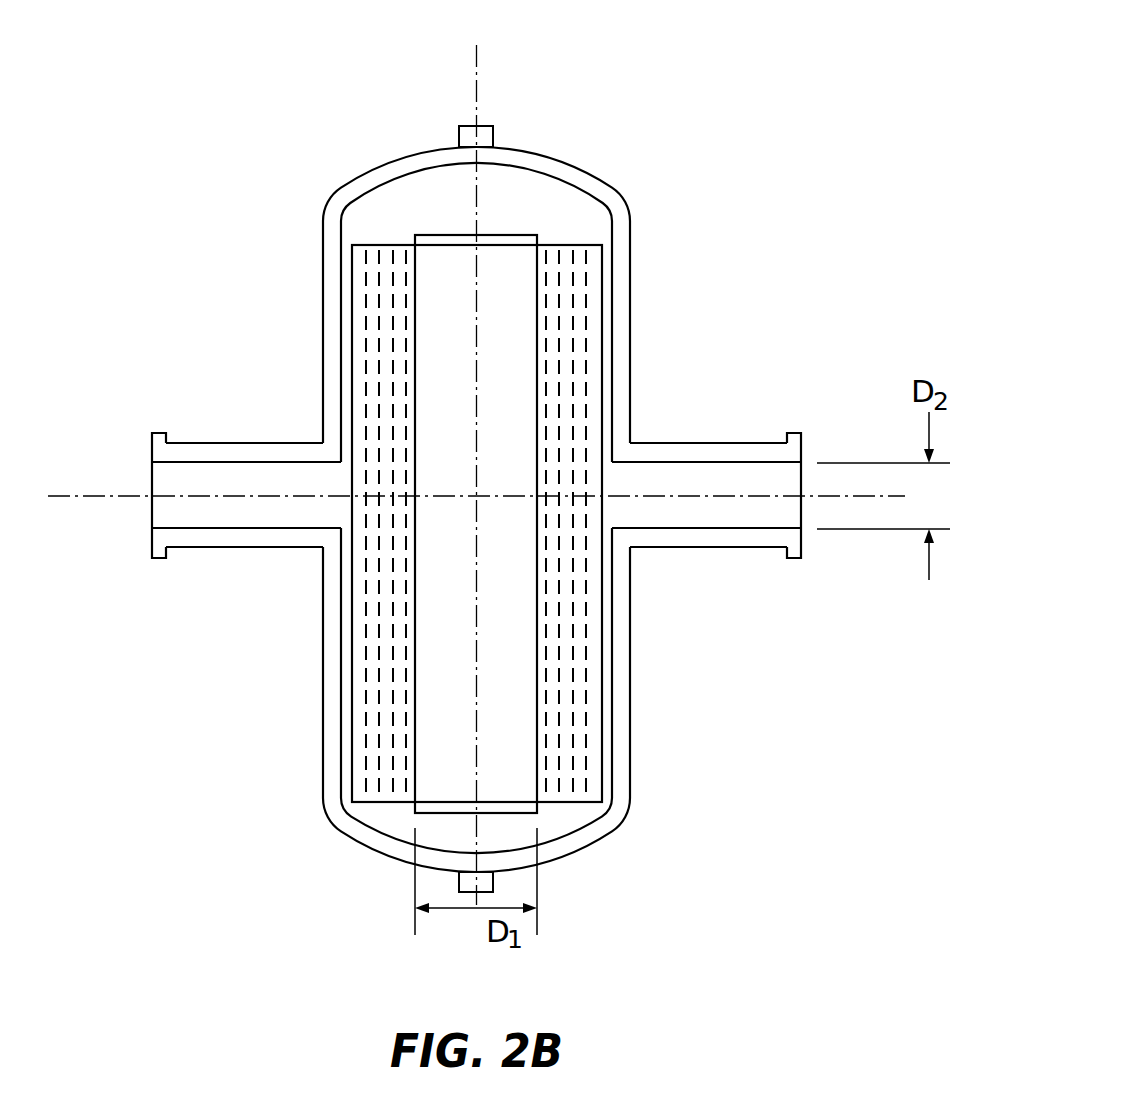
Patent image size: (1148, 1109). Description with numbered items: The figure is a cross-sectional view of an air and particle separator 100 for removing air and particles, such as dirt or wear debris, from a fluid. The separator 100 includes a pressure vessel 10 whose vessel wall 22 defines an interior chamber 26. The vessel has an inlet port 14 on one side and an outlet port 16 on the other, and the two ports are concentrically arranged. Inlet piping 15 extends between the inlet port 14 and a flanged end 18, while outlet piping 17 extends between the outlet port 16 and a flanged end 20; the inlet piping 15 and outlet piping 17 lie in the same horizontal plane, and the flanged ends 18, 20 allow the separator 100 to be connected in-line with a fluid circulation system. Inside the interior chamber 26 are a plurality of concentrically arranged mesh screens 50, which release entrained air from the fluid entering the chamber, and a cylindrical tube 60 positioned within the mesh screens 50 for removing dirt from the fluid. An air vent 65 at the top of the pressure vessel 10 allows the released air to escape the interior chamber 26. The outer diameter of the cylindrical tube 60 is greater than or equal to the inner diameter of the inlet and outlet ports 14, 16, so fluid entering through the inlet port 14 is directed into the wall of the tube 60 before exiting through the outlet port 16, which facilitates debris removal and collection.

The separator apparatus 100 is at (800, 72).
The pressure vessel 10 is at (358, 168).
The inlet port 14 is at (327, 478).
The inlet piping 15 is at (240, 442).
The outlet port 16 is at (622, 483).
The outlet piping 17 is at (703, 443).
The flanged end 18 is at (159, 431).
The flanged end 20 is at (793, 433).
The vessel wall 22 is at (631, 728).
The interior chamber 26 is at (437, 205).
The mesh screens 50 is at (572, 245).
The cylindrical tube 60 is at (518, 235).
The air vent 65 is at (482, 125).